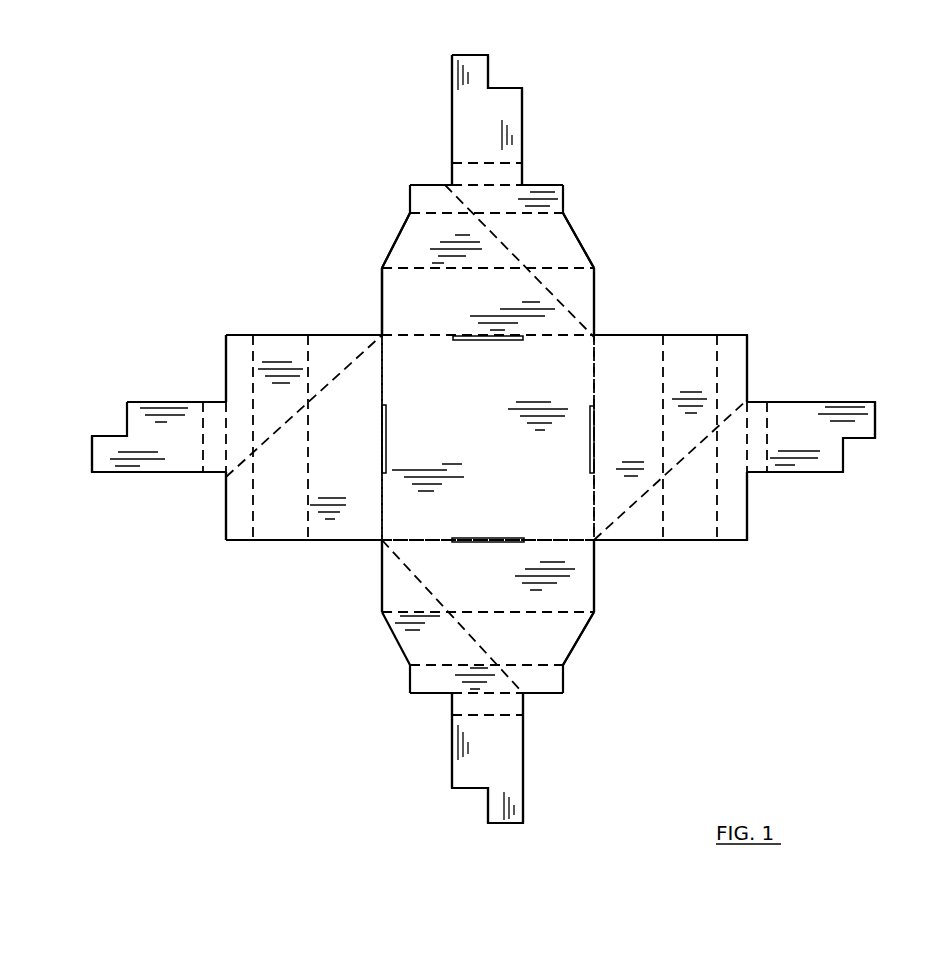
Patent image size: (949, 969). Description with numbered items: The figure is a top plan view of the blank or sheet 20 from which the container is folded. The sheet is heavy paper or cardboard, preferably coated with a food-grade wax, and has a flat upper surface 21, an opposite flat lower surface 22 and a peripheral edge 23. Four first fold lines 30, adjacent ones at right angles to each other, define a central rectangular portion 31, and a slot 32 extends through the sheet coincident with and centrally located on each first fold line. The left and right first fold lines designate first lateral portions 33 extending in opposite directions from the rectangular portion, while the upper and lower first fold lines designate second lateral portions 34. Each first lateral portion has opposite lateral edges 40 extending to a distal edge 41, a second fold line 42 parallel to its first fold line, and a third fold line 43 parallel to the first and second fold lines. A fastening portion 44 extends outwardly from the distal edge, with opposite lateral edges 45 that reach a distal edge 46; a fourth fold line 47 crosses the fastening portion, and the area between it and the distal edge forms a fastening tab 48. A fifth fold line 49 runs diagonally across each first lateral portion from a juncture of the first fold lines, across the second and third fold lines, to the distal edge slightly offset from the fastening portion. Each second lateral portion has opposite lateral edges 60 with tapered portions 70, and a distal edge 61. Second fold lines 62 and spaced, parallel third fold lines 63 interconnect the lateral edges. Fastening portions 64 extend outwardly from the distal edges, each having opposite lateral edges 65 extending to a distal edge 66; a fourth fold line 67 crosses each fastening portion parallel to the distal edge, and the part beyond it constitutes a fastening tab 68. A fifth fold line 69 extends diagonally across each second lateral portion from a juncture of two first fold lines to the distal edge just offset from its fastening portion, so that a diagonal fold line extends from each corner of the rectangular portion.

The blank or sheet 20 is at (662, 303).
The upper surface 21 is at (400, 510).
The lower surface 22 is at (382, 540).
The peripheral edge 23 is at (275, 541).
The first fold lines 30 is at (385, 378).
The rectangular portion 31 is at (488, 450).
The slot 32 is at (495, 341).
The first lateral portions 33 is at (226, 524).
The second lateral portions 34 is at (380, 280).
The opposite lateral edges 40 is at (238, 335).
The distal edge 41 is at (226, 348).
The second fold line 42 is at (308, 445).
The third fold line 43 is at (253, 484).
The fastening portion 44 is at (130, 473).
The opposite lateral edges 45 is at (145, 402).
The distal edge 46 is at (92, 458).
The fourth fold line 47 is at (203, 431).
The fastening tab 48 is at (130, 447).
The fifth fold line 49 is at (328, 385).
The opposite lateral edges 60 is at (395, 246).
The distal edge 61 is at (548, 185).
The second fold lines 62 is at (555, 268).
The third fold lines 63 is at (540, 213).
The fastening portions 64 is at (507, 105).
The opposite lateral edges 65 is at (452, 112).
The distal edge 66 is at (466, 55).
The fourth fold line 67 is at (493, 163).
The fastening tab 68 is at (488, 128).
The fifth fold line 69 is at (565, 305).
The tapered portions 70 is at (405, 222).